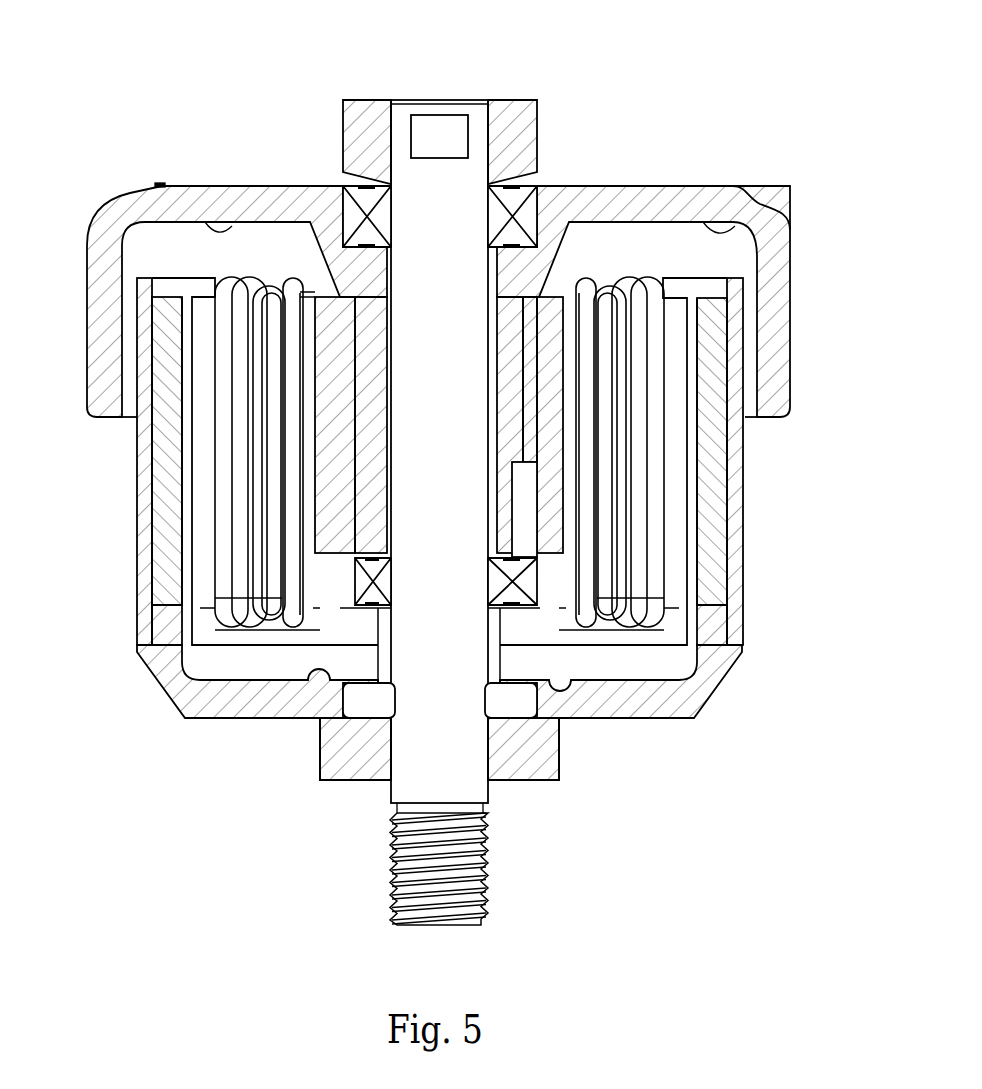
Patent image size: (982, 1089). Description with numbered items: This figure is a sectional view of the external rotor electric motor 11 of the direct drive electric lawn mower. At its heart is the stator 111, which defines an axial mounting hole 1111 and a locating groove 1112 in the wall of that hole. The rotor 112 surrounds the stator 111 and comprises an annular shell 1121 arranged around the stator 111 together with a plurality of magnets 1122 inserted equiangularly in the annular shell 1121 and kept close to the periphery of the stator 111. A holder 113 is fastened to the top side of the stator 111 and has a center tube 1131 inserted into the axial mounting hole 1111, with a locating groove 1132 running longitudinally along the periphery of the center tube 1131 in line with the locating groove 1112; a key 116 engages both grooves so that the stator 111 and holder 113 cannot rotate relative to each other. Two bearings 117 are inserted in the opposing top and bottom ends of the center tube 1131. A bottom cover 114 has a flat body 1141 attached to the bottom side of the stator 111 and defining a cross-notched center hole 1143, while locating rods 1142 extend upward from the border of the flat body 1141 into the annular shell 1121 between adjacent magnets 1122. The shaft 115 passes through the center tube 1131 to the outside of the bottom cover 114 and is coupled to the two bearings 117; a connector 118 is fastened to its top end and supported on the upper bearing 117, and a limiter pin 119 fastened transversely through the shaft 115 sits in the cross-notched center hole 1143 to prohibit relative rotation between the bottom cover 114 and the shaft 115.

The external rotor electric motor 11 is at (689, 136).
The stator 111 is at (203, 280).
The axial mounting hole 1111 is at (538, 408).
The locating groove 1112 is at (538, 493).
The rotor 112 is at (745, 577).
The annular shell 1121 is at (737, 448).
The magnets 1122 is at (157, 497).
The holder 113 is at (794, 291).
The center tube 1131 is at (370, 412).
The locating groove 1132 is at (507, 498).
The bottom cover 114 is at (641, 718).
The flat body 1141 is at (245, 705).
The locating rods 1142 is at (157, 620).
The cross-notched center hole 1143 is at (320, 768).
The shaft 115 is at (410, 738).
The key 116 is at (523, 523).
The bearings 117 is at (345, 198).
The connector 118 is at (362, 126).
The limiter pin 119 is at (363, 700).